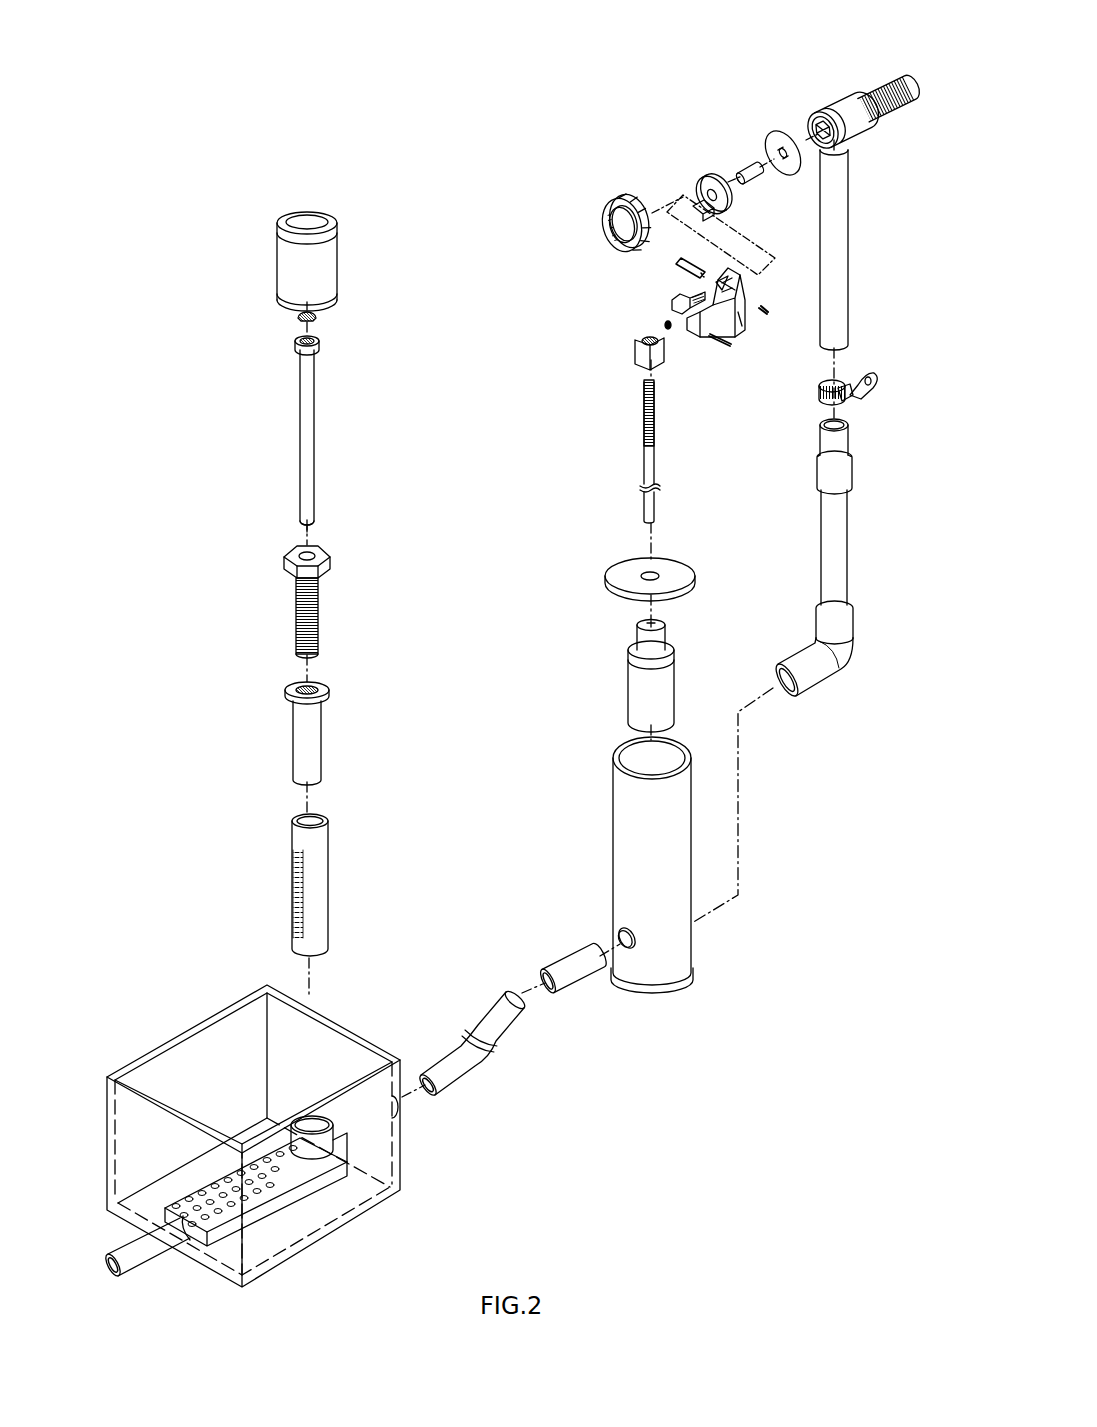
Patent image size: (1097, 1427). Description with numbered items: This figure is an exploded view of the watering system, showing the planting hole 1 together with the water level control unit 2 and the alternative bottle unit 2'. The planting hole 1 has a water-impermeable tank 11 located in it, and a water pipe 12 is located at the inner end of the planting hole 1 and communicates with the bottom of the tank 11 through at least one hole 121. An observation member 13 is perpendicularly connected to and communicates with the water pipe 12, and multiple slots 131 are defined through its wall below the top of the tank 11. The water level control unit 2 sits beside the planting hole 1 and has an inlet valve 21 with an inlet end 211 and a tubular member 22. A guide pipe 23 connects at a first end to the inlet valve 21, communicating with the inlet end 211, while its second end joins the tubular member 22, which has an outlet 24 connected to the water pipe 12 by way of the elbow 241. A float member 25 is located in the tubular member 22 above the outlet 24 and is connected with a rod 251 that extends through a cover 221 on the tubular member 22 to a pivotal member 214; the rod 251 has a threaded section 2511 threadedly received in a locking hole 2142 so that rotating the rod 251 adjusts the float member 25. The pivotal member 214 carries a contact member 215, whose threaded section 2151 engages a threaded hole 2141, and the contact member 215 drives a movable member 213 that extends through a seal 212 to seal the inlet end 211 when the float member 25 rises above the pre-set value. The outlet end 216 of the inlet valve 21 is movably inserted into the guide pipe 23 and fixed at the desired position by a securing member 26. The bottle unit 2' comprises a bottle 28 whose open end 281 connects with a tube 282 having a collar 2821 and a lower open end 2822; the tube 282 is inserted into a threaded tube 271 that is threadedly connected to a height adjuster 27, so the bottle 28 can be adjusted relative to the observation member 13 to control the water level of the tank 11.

The planting hole 1 is at (169, 1011).
The tank 11 is at (112, 1092).
The water pipe 12 is at (253, 1205).
The hole 121 is at (292, 1172).
The observation member 13 is at (297, 835).
The slots 131 is at (297, 873).
The water level control unit 2 is at (667, 562).
The bottle unit 2' is at (314, 542).
The inlet valve 21 is at (838, 110).
The inlet end 211 is at (890, 78).
The seal 212 is at (778, 147).
The movable member 213 is at (745, 168).
The pivotal member 214 is at (682, 305).
The threaded hole 2141 is at (710, 283).
The locking hole 2142 is at (636, 340).
The contact member 215 is at (678, 307).
The threaded section 2151 is at (710, 297).
The outlet end 216 is at (838, 267).
The tubular member 22 is at (624, 857).
The cover 221 is at (622, 563).
The guide pipe 23 is at (840, 553).
The outlet 24 is at (575, 960).
The bent hose 241 is at (510, 1015).
The float member 25 is at (632, 676).
The rod 251 is at (646, 460).
The threaded section 2511 is at (646, 430).
The securing member 26 is at (850, 405).
The height adjuster 27 is at (290, 690).
The threaded tube 271 is at (312, 610).
The bottle 28 is at (285, 262).
The open end 281 is at (300, 318).
The tube 282 is at (306, 423).
The rod collar 2821 is at (318, 340).
The lower open end 2822 is at (314, 522).